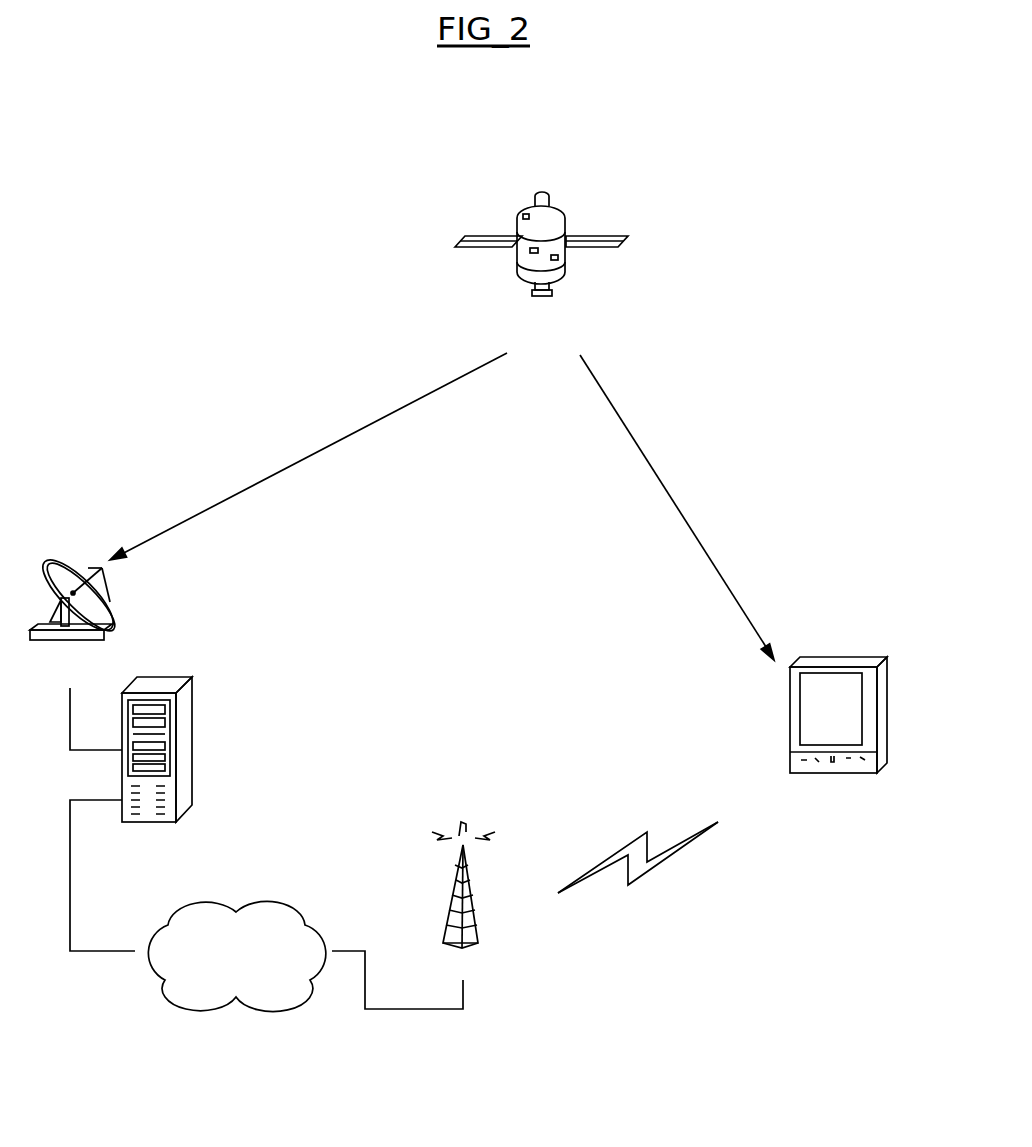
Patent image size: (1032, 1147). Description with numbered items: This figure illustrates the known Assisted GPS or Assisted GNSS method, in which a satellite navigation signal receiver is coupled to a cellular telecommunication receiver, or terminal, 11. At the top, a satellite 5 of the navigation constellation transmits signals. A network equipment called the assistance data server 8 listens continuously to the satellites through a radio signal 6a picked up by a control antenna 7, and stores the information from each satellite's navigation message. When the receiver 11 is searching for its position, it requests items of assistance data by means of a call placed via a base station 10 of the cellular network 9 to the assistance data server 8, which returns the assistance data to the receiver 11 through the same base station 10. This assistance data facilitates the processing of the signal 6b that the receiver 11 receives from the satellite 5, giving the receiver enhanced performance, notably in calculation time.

The satellite 5 is at (568, 217).
The radio signal 6a is at (290, 467).
The signal 6b is at (667, 488).
The control antenna 7 is at (117, 620).
The assistance data server 8 is at (192, 732).
The cellular network 9 is at (242, 1007).
The base station 10 is at (473, 897).
The cellular telecommunication receiver 11 is at (847, 655).